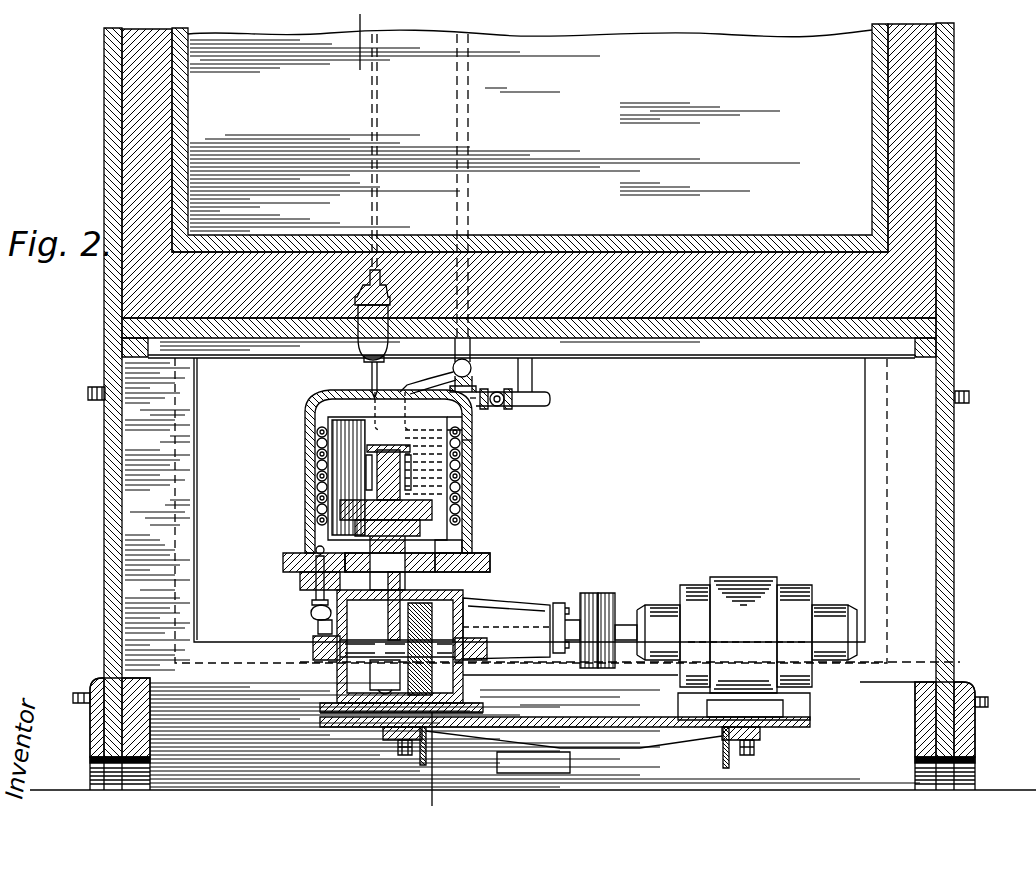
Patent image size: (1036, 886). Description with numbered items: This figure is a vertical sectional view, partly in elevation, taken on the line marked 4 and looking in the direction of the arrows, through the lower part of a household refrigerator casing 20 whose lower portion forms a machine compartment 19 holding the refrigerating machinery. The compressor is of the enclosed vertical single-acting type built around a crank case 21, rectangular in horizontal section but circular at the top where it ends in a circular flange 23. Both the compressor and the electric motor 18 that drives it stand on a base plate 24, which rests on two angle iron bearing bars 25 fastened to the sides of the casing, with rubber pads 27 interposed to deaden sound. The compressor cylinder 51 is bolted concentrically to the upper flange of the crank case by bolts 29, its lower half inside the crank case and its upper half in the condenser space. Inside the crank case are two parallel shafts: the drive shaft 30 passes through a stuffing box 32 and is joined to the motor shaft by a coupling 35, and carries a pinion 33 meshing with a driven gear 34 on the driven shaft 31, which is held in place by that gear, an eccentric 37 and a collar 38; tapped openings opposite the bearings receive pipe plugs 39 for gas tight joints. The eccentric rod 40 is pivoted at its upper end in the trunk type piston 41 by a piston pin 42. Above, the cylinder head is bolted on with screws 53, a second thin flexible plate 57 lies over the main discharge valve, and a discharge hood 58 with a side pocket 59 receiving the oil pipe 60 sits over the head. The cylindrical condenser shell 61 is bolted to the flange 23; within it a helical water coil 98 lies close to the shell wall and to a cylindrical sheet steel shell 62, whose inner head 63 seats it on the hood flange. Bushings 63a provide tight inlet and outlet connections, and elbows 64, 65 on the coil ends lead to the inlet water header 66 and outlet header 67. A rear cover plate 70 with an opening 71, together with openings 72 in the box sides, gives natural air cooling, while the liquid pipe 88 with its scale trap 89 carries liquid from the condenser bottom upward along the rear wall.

The section line 4- 4 is at (424, 804).
The electric motor 18 is at (742, 578).
The compartment 19 is at (529, 500).
The household refrigerator casing 20 is at (950, 478).
The crank case 21 is at (328, 692).
The circular flange 23 is at (300, 572).
The base plate 24 is at (790, 731).
The angle iron bearing bars 25 is at (722, 752).
The rubber pads 27 is at (760, 739).
The bolts 29 is at (490, 562).
The drive shaft 30 is at (560, 602).
The driven shaft 31 is at (443, 660).
The stuffing box 32 is at (540, 598).
The pinion 33 is at (457, 628).
The driven gear 34 is at (442, 608).
The coupling 35 is at (598, 598).
The eccentric 37 is at (388, 699).
The collar 38 is at (375, 678).
The pipe plugs 39 is at (487, 648).
The eccentric rod 40 is at (330, 626).
The piston 41 is at (446, 592).
The piston pin 42 is at (314, 599).
The compressor cylinder 51 is at (473, 545).
The screws 53 is at (420, 486).
The thin flexible plate 57 is at (320, 525).
The discharge hood 58 is at (430, 462).
The open pocket 59 is at (340, 485).
The oil pipe 60 is at (335, 470).
The cylindrical condenser shell 61 is at (295, 437).
The cylindrical sheet steel shell 62 is at (477, 420).
The inner head 63 is at (473, 446).
The bushings 63a is at (500, 389).
The elbow 64 is at (330, 612).
The elbow 65 is at (467, 371).
The inlet water header 66 is at (984, 708).
The outlet header 67 is at (963, 392).
The cover plate 70 is at (887, 494).
The opening 71 is at (515, 390).
The openings 72 is at (976, 772).
The liquid pipe 88 is at (380, 103).
The scale trap 89 is at (392, 304).
The helical water coil 98 is at (300, 418).